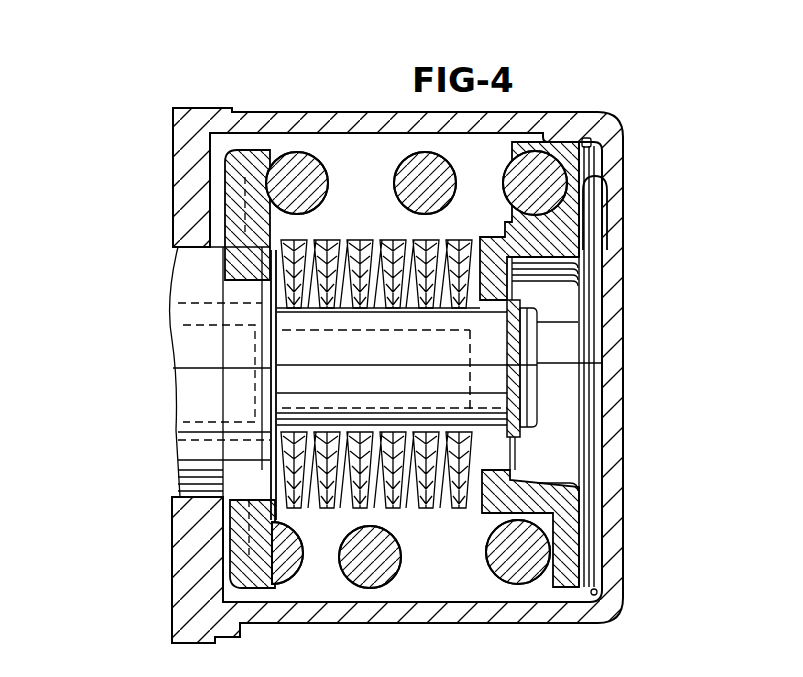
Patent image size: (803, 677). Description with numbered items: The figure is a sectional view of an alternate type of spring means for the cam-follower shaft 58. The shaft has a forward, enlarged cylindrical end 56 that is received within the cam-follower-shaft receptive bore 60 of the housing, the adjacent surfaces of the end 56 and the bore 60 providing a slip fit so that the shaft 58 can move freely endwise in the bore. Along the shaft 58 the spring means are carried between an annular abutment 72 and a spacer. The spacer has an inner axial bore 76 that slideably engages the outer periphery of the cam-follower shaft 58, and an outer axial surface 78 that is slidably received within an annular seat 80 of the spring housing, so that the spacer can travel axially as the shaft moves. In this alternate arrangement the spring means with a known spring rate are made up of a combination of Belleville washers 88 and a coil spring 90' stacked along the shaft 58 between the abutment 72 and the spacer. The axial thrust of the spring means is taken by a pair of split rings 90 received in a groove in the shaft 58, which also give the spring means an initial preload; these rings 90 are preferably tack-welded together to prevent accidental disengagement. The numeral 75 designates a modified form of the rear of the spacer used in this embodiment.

The enlarged cylindrical end 56 is at (196, 277).
The cam-follower shaft 58 is at (430, 367).
The cam-follower-shaft receptive bore 60 is at (197, 485).
The annular abutment 72 is at (280, 347).
The modified rear of spacer 75 is at (545, 243).
The inner axial bore 76 is at (489, 314).
The outer axial surface 78 is at (594, 118).
The annular seat 80 is at (560, 140).
The Belleville washers 88 is at (357, 240).
The split rings 90 is at (543, 368).
The coil spring 90' is at (416, 365).